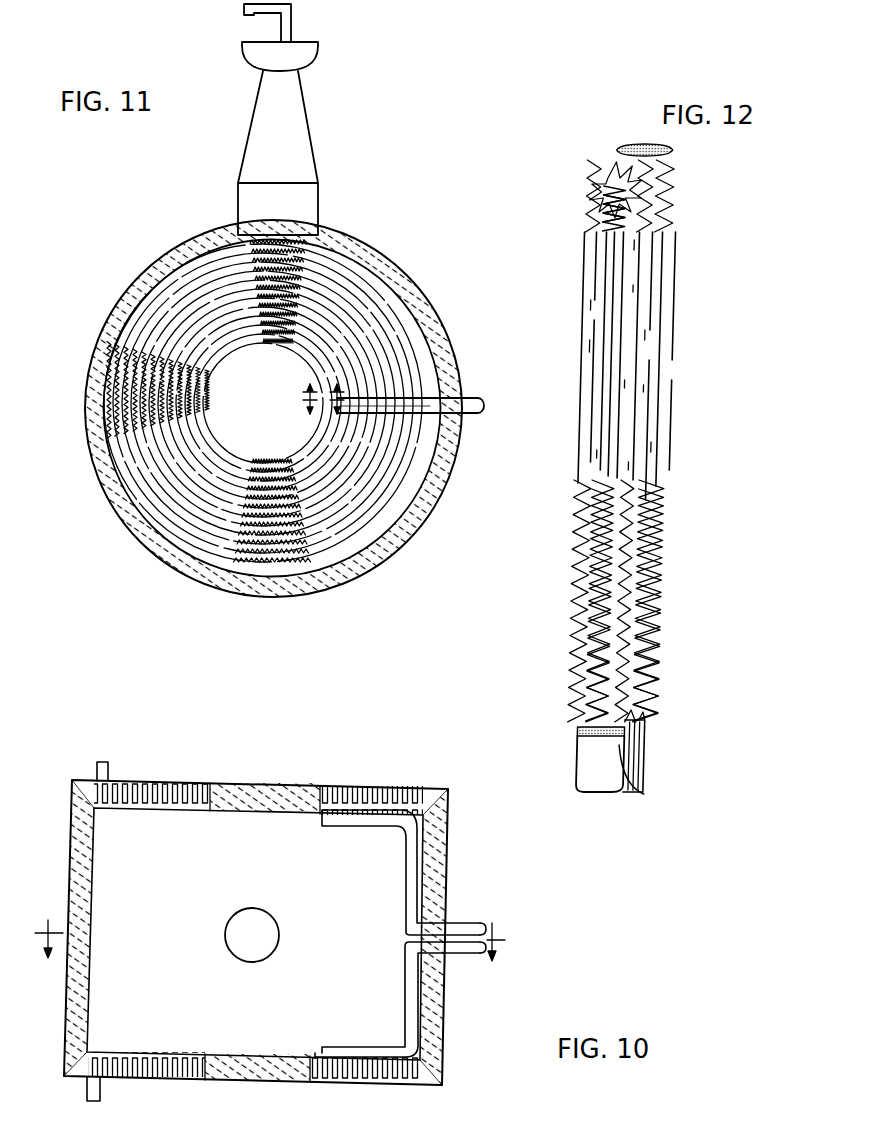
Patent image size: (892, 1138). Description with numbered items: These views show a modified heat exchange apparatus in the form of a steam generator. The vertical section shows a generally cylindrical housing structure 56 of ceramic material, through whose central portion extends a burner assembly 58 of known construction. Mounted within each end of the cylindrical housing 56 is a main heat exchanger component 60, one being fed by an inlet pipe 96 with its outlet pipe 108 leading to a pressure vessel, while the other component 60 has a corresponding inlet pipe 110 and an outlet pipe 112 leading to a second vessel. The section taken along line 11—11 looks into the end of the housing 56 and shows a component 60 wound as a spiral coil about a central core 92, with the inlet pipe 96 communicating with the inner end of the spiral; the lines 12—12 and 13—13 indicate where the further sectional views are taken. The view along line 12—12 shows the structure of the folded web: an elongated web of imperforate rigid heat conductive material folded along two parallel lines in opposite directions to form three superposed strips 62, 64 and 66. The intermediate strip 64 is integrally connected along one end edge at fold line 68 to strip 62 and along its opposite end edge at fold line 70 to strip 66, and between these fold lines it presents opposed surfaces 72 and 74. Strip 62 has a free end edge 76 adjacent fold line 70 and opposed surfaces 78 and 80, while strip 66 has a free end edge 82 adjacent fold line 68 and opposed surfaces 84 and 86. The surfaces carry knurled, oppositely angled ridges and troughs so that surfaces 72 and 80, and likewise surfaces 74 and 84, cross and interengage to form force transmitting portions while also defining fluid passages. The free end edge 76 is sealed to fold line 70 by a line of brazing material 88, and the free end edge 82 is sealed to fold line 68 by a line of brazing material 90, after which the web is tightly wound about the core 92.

In FIG. 10, the section line 11— 11 is at (269, 922).
In FIG. 11, the section line 12— 12 is at (324, 388).
In FIG. 11, the section line 13— 13 is at (322, 420).
In FIG. 11, the cylindrical housing structure 56 is at (222, 582).
In FIG. 10, the cylindrical housing structure 56 is at (78, 842).
In FIG. 11, the burner assembly 58 is at (305, 171).
In FIG. 10, the burner assembly 58 is at (268, 937).
In FIG. 11, the main heat exchanger component 60 is at (400, 265).
In FIG. 12, the main heat exchanger component 60 is at (577, 185).
In FIG. 10, the main heat exchanger component 60 is at (400, 788).
In FIG. 12, the strip 62 is at (592, 456).
In FIG. 12, the intermediate strip 64 is at (613, 390).
In FIG. 12, the strip 66 is at (648, 402).
In FIG. 12, the fold line 68 is at (606, 160).
In FIG. 12, the fold line 70 is at (652, 752).
In FIG. 12, the surface 72 is at (609, 318).
In FIG. 12, the surface 74 is at (638, 372).
In FIG. 12, the free end edge 76 is at (597, 738).
In FIG. 12, the surface 78 is at (578, 487).
In FIG. 12, the surface 80 is at (580, 537).
In FIG. 12, the free end edge 82 is at (664, 150).
In FIG. 12, the surface 84 is at (630, 472).
In FIG. 12, the surface 86 is at (655, 515).
In FIG. 12, the line of brazing material 88 is at (651, 783).
In FIG. 12, the line of brazing material 90 is at (612, 147).
In FIG. 11, the central core 92 is at (276, 402).
In FIG. 10, the central core 92 is at (275, 790).
In FIG. 11, the inlet pipe 96 is at (413, 408).
In FIG. 10, the inlet pipe 96 is at (365, 1042).
In FIG. 10, the outlet pipe 108 is at (100, 1088).
In FIG. 10, the inlet pipe 110 is at (373, 831).
In FIG. 10, the outlet pipe 112 is at (108, 776).